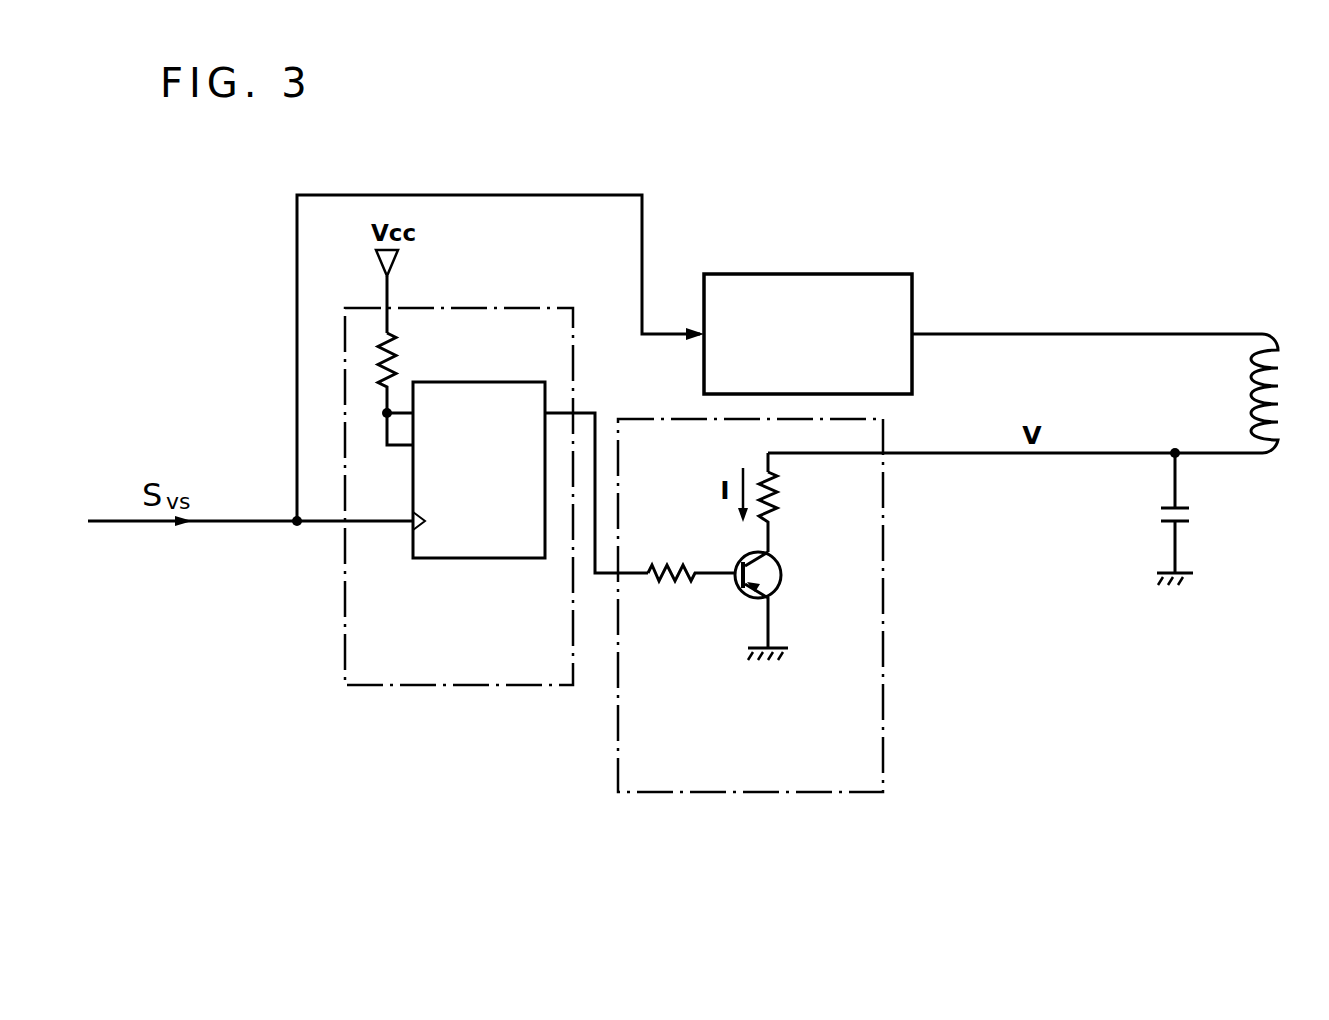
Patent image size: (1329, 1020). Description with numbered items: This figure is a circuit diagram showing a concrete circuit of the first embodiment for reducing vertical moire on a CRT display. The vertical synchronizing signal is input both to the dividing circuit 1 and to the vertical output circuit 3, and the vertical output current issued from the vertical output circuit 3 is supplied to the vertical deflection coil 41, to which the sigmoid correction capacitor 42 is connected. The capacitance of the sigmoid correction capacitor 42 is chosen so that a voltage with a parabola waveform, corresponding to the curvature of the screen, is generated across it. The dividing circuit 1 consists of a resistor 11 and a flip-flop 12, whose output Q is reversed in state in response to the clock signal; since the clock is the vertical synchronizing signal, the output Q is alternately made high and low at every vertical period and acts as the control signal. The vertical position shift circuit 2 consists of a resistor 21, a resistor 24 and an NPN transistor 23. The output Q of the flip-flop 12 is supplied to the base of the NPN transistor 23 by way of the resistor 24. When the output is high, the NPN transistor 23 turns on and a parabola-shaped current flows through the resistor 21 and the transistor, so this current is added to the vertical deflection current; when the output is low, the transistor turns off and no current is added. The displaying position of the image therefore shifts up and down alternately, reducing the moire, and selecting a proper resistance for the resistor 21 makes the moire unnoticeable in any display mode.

The dividing circuit 1 is at (462, 685).
The vertical position shift circuit 2 is at (883, 670).
The vertical output circuit 3 is at (822, 274).
The resistor 11 is at (395, 362).
The flip-flop 12 is at (494, 382).
The resistor 21 is at (778, 504).
The NPN transistor 23 is at (776, 590).
The resistor 24 is at (680, 586).
The vertical deflection coil 41 is at (1252, 400).
The sigmoid correction capacitor 42 is at (1195, 516).